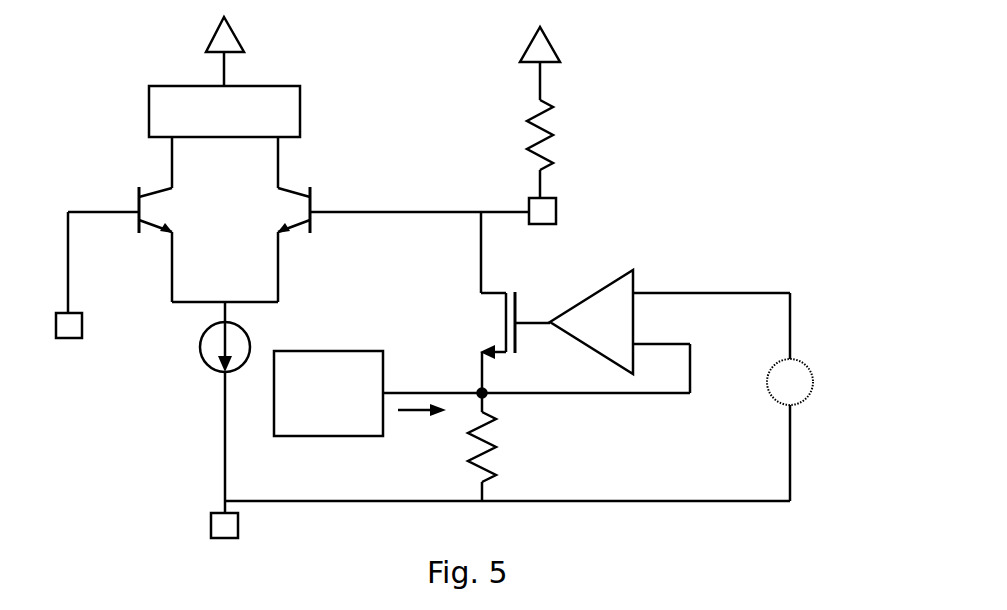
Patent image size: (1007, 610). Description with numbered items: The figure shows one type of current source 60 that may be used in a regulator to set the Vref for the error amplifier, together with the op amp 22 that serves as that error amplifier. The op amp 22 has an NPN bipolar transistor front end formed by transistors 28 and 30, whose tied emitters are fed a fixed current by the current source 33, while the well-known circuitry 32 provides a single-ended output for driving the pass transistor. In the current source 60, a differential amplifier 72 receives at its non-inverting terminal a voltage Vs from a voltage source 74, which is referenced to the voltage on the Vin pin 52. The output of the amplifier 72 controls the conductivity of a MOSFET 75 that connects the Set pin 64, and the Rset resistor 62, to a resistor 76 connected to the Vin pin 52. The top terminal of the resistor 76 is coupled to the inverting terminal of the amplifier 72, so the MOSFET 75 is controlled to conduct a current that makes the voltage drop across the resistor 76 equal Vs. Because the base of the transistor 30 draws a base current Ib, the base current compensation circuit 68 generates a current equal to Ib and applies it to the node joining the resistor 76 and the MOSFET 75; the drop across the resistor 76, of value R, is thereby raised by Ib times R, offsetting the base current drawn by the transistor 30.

The op amp 22 is at (108, 146).
The circuitry 32 is at (175, 86).
The NPN transistor 28 is at (158, 247).
The NPN transistor 30 is at (283, 205).
The current source 33 is at (200, 350).
The Vin pin 52 is at (210, 518).
The Rset resistor 62 is at (524, 131).
The Set pin 64 is at (558, 209).
The base current compensation circuit 68 is at (307, 351).
The differential amplifier 72 is at (602, 283).
The MOSFET 75 is at (530, 302).
The resistor 76 is at (503, 460).
The voltage source 74 is at (765, 380).
The current source 60 is at (722, 229).